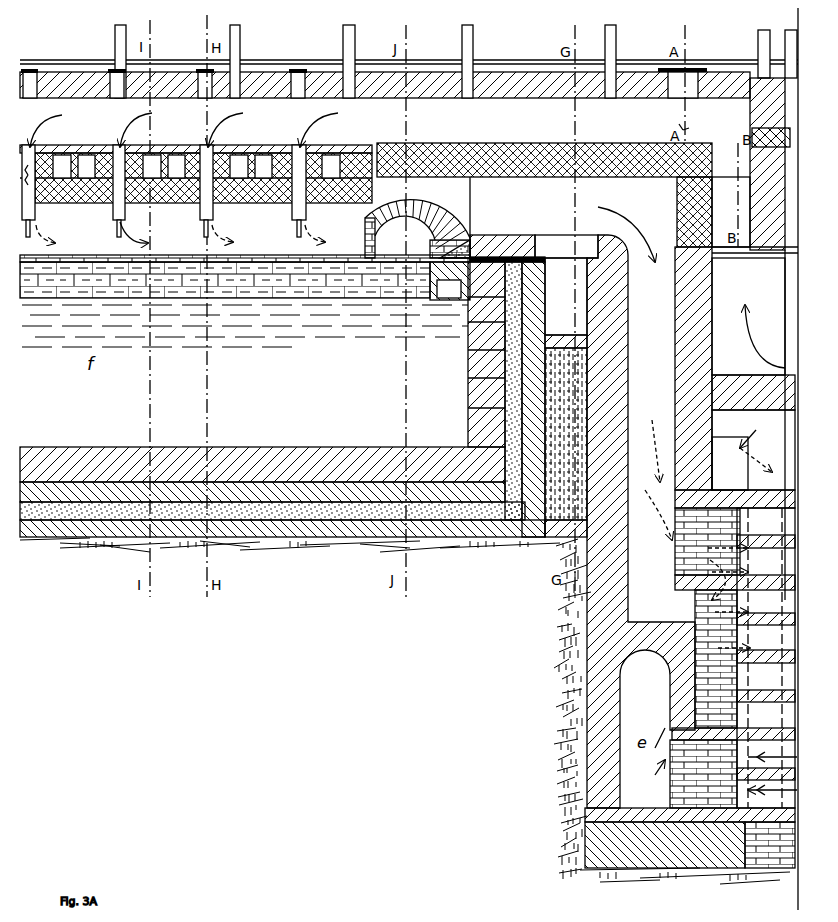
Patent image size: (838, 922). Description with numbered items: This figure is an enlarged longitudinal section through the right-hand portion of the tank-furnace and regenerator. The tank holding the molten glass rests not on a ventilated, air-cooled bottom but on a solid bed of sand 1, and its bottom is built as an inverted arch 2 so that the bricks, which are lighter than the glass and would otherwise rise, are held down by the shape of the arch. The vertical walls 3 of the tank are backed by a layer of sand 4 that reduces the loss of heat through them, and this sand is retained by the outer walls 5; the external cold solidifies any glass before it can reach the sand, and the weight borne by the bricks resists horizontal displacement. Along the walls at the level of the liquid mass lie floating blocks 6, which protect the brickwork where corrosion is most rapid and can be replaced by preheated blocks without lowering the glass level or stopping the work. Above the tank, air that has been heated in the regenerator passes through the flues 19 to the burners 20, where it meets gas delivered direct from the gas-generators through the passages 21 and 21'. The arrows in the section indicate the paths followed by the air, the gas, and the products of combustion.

The bed of sand 1 is at (457, 298).
The inverted arch 2 is at (383, 462).
The vertical walls 3 is at (474, 346).
The layer of sand 4 is at (512, 332).
The outer walls 5 is at (540, 292).
The floating blocks 6 is at (245, 276).
The flues 19 is at (196, 166).
The burners 20 is at (164, 191).
The passages 21 is at (713, 188).
The passages 21' is at (196, 159).